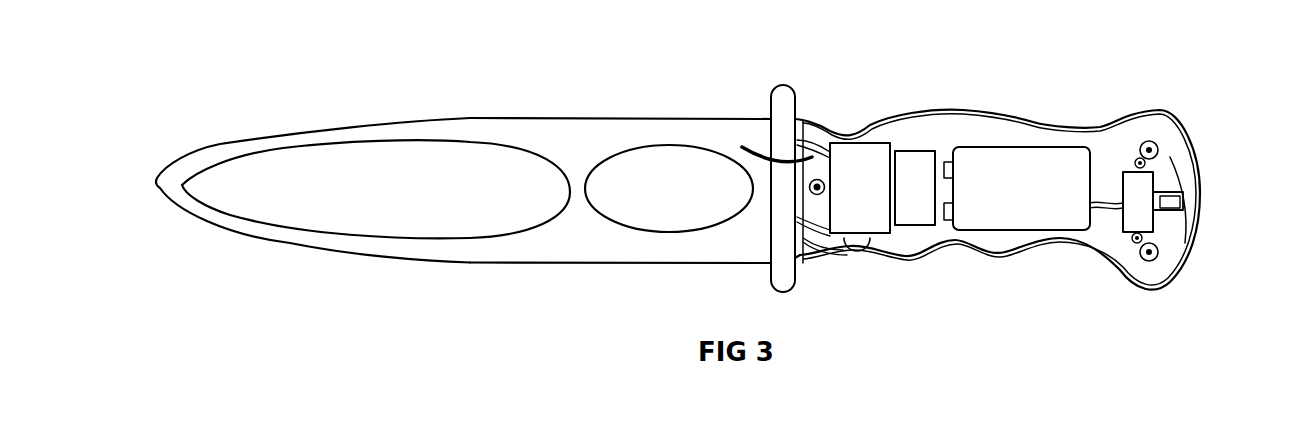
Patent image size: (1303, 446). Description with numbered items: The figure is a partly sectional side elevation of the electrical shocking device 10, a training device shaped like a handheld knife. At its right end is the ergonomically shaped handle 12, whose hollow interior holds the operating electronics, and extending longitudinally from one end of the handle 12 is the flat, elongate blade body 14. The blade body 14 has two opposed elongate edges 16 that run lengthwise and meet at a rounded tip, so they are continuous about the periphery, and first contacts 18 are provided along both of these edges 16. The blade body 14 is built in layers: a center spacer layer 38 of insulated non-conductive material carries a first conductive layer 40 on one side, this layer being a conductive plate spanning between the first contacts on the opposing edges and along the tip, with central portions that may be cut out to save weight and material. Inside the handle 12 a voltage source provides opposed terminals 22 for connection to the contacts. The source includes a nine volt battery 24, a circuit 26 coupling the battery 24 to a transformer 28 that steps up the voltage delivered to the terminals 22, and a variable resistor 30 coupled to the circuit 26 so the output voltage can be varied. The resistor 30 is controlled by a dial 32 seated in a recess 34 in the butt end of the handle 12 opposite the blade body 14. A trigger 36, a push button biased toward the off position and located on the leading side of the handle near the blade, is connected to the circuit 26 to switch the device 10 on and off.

The electrical shocking device 10 is at (519, 60).
The handle 12 is at (1002, 250).
The blade body 14 is at (417, 210).
The opposed elongate edges 16 is at (667, 118).
The first contacts 18 is at (462, 120).
The opposed terminals 22 is at (832, 303).
The battery 24 is at (1027, 148).
The circuit 26 is at (923, 150).
The transformer 28 is at (863, 155).
The variable resistor 30 is at (1145, 177).
The dial 32 is at (1170, 208).
The recess 34 is at (1173, 185).
The trigger 36 is at (863, 247).
The center spacer layer 38 is at (292, 177).
The first conductive layer 40 is at (598, 143).